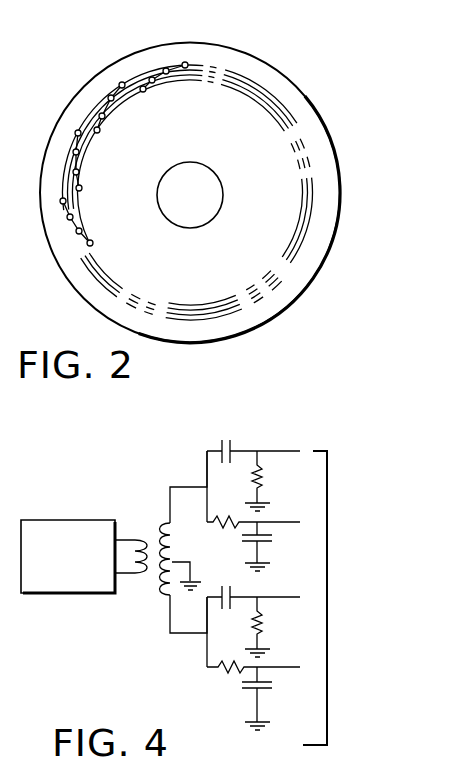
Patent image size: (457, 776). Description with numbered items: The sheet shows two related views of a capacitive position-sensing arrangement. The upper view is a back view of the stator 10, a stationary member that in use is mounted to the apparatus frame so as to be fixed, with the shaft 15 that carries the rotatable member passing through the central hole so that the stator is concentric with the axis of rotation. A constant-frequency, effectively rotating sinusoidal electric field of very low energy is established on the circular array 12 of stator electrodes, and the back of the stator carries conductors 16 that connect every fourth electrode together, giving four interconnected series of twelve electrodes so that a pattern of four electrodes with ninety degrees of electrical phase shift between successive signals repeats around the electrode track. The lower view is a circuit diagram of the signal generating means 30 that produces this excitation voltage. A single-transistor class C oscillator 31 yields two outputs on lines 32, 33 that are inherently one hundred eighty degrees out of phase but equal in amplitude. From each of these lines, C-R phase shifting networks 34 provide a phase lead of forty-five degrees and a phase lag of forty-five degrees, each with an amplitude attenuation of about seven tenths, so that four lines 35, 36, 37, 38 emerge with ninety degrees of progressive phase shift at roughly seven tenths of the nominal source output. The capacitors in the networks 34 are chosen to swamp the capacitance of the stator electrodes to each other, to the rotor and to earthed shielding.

In FIG. 2, the stator member 10 is at (302, 88).
In FIG. 2, the circular array 12 is at (111, 170).
In FIG. 2, the conductors 16 is at (118, 83).
In FIG. 4, the shaft 15 is at (11, 593).
In FIG. 4, the signal generating means 30 is at (162, 475).
In FIG. 4, the class C oscillator 31 is at (87, 548).
In FIG. 4, the line 32 is at (170, 490).
In FIG. 4, the line 33 is at (167, 625).
In FIG. 4, the C-R phase shifting networks 34 is at (240, 438).
In FIG. 4, the line 35 is at (298, 451).
In FIG. 4, the line 36 is at (293, 522).
In FIG. 4, the line 37 is at (292, 597).
In FIG. 4, the line 38 is at (292, 667).